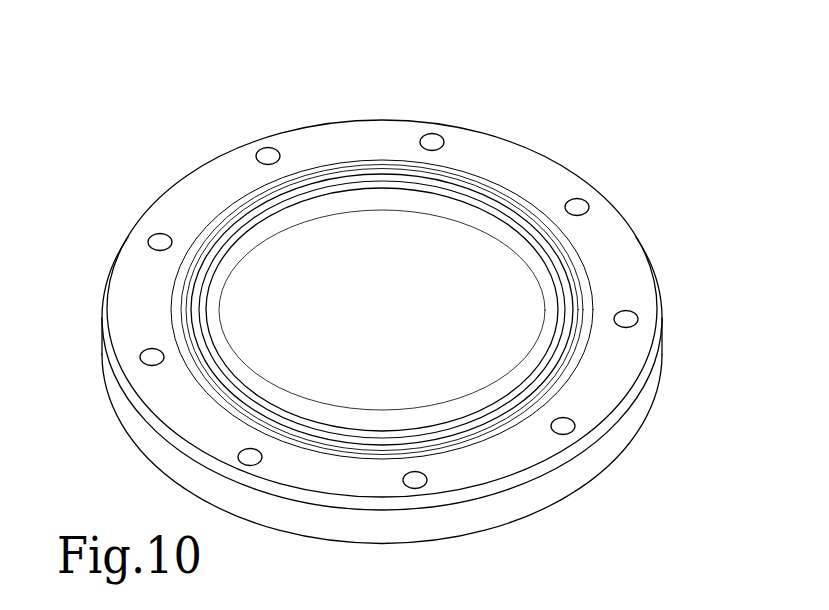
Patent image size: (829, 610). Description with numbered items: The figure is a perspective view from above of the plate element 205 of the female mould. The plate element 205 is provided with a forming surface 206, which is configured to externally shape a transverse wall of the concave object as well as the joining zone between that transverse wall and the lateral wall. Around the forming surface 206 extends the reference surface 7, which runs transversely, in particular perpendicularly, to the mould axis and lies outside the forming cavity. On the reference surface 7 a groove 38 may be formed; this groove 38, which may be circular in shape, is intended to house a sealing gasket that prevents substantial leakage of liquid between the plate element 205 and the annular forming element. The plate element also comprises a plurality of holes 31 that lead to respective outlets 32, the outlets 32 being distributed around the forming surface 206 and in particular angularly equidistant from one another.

The plate element 205 is at (622, 125).
The forming surface 206 is at (410, 283).
The reference surface 7 is at (188, 205).
The holes 31 is at (268, 156).
The outlets 32 is at (415, 480).
The groove 38 is at (583, 283).